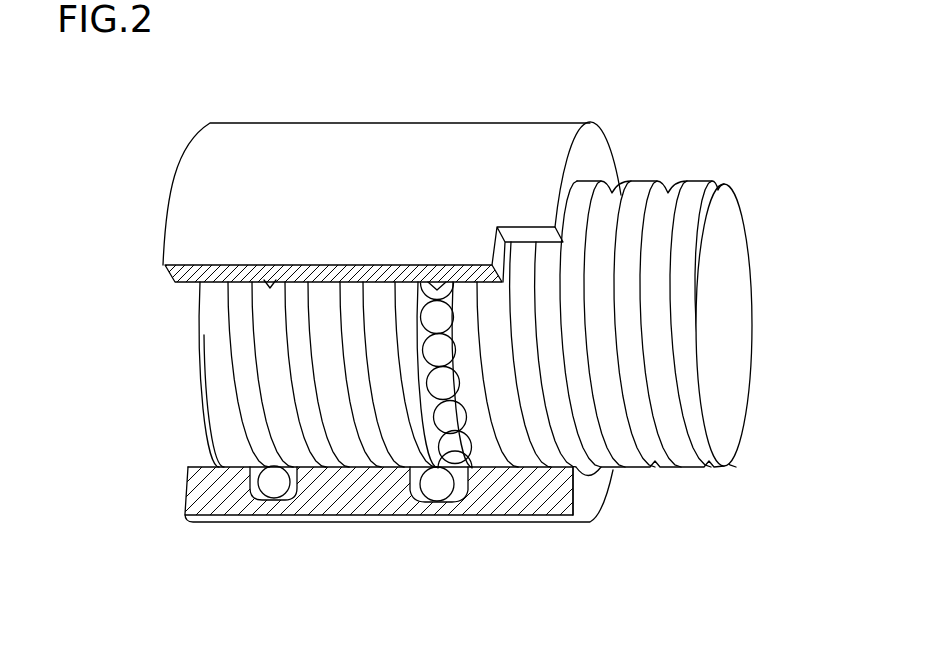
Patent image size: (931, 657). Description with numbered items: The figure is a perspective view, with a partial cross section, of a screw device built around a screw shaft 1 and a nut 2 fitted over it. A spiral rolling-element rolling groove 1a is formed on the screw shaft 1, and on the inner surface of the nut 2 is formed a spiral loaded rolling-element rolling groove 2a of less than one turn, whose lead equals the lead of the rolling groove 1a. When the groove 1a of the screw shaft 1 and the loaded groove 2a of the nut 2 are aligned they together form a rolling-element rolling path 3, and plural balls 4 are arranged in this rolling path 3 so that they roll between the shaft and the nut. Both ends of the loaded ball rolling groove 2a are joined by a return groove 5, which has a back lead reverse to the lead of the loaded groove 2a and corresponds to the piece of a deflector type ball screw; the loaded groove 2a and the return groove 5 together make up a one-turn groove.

The screw shaft 1 is at (744, 254).
The rolling-element rolling groove 1a is at (669, 195).
The nut 2 is at (522, 123).
The loaded rolling-element rolling groove 2a is at (270, 282).
The rolling-element rolling path 3 is at (449, 318).
The balls 4 is at (442, 318).
The return groove 5 is at (282, 503).